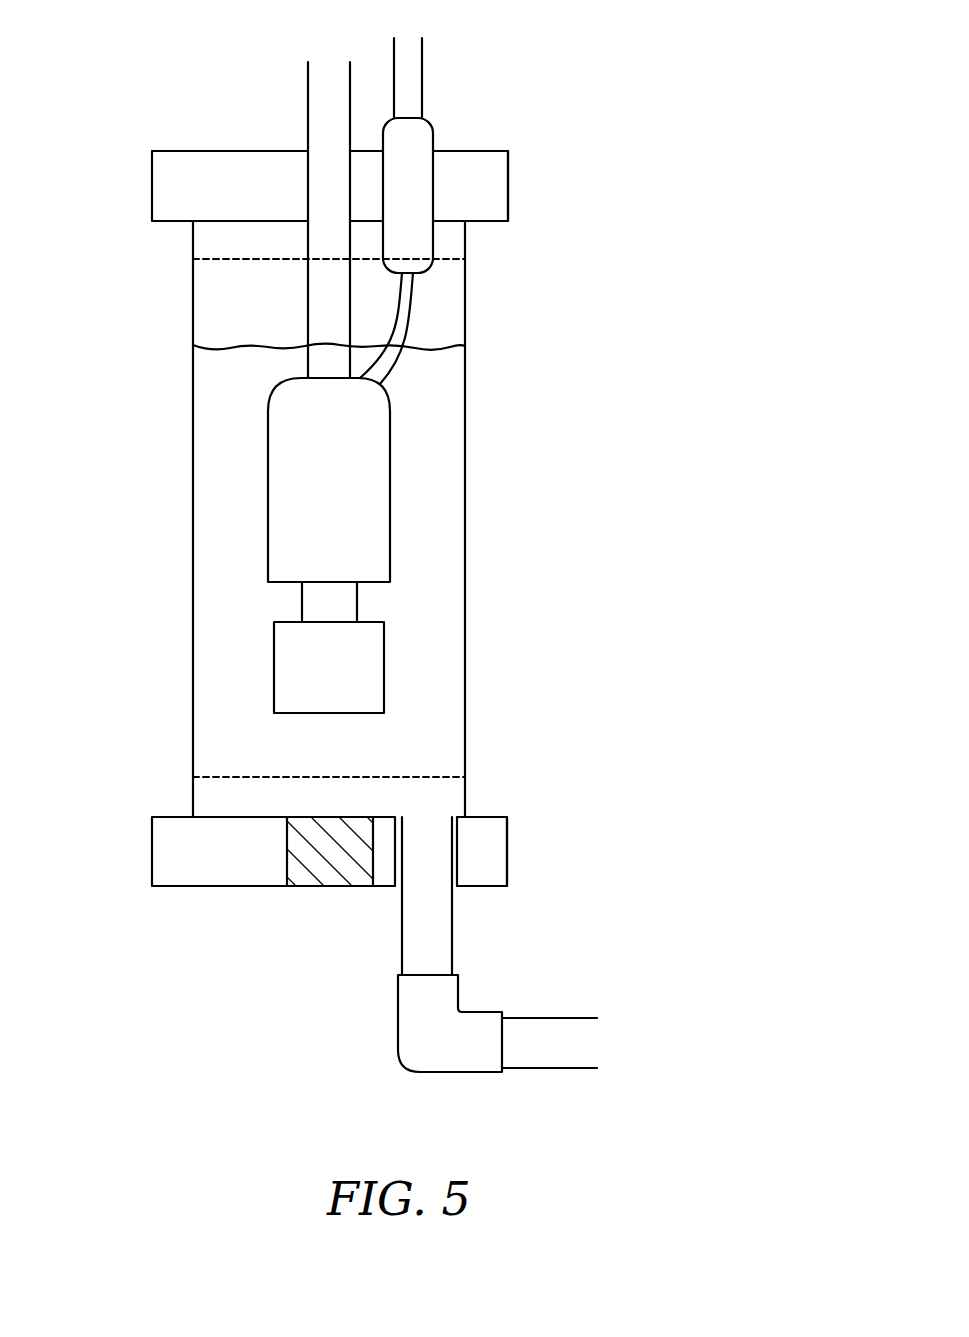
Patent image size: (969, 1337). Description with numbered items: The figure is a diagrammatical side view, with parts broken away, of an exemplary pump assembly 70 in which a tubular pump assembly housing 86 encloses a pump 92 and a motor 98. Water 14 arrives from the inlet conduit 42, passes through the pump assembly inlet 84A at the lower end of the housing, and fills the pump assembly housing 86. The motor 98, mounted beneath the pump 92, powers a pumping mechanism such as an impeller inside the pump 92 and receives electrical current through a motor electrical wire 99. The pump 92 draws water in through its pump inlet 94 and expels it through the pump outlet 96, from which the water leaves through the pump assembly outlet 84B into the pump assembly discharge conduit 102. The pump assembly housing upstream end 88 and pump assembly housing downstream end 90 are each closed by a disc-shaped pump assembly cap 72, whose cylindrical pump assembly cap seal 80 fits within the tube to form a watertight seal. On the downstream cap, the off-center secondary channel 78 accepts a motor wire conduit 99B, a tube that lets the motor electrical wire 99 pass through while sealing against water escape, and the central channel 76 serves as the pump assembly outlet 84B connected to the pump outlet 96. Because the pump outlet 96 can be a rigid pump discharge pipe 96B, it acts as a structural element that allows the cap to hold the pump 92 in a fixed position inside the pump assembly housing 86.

The water 14 is at (213, 405).
The inlet conduit 42 is at (548, 1030).
The pump assembly 70 is at (590, 562).
The pump assembly cap 72 is at (152, 192).
The central channel 76 is at (307, 178).
The secondary channel 78 is at (433, 165).
The pump assembly cap seal 80 is at (212, 258).
The pump assembly inlet 84A is at (432, 857).
The pump assembly outlet 84B is at (328, 173).
The pump assembly housing 86 is at (465, 397).
The pump assembly housing upstream end 88 is at (465, 815).
The pump assembly housing downstream end 90 is at (508, 221).
The pump 92 is at (390, 493).
The pump inlet 94 is at (302, 587).
The pump outlet 96 is at (307, 322).
The rigid pump discharge pipe 96B is at (307, 367).
The motor 98 is at (283, 680).
The motor electrical wire 99 is at (408, 313).
The motor wire conduit 99B is at (415, 72).
The pump assembly discharge conduit 102 is at (318, 82).